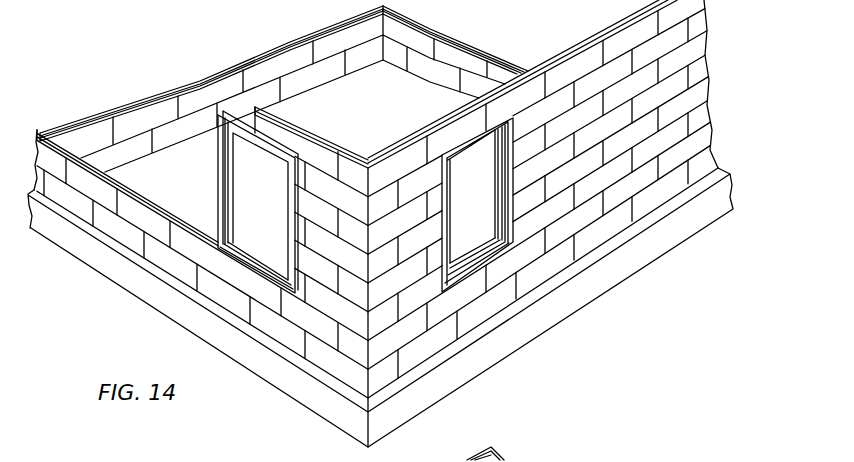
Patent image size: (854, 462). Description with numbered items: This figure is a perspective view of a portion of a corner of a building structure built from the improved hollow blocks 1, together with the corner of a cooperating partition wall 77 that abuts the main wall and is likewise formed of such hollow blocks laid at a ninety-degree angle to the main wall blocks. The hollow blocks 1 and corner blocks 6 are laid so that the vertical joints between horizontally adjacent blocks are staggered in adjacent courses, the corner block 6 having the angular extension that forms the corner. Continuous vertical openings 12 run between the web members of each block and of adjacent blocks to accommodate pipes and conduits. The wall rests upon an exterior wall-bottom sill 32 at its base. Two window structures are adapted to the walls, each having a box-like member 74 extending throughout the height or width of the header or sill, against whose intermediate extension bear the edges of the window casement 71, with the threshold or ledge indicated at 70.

The hollow block 1 is at (460, 107).
The corner block 6 is at (393, 151).
The continuous vertical openings 12 is at (412, 132).
The exterior wall-bottom sill 32 is at (506, 348).
The door or window threshold or ledge 70 is at (487, 260).
The window casement 71 is at (462, 270).
The box-like member 74 is at (441, 223).
The partition wall 77 is at (457, 37).